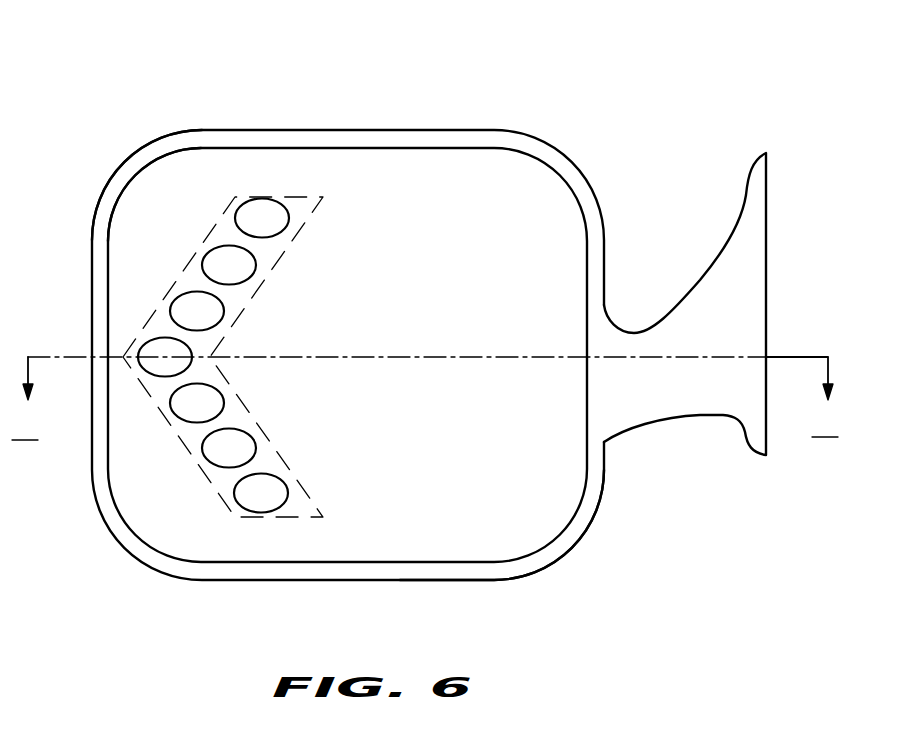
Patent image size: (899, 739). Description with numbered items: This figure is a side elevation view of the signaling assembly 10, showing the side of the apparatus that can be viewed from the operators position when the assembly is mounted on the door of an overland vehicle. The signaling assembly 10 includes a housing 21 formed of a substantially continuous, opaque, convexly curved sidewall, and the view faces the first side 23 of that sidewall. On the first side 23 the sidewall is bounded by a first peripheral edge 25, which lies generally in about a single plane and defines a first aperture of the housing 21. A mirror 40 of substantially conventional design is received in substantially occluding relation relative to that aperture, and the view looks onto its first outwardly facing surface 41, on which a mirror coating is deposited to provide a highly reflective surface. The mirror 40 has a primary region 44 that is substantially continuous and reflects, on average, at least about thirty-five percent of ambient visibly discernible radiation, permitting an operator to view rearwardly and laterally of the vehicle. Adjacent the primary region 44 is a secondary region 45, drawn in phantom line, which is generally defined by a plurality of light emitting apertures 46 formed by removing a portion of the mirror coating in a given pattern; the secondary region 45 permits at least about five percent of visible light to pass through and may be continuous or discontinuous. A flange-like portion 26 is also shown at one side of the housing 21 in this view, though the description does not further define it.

The signaling assembly 10 is at (425, 324).
The housing 21 is at (573, 158).
The first side 23 is at (532, 568).
The first peripheral edge 25 is at (110, 197).
The mounting flange 26 is at (749, 330).
The mirror 40 is at (517, 514).
The first outwardly facing surface 41 is at (410, 512).
The primary region 44 is at (482, 422).
The secondary region 45 is at (152, 318).
The light emitting apertures 46 is at (207, 310).